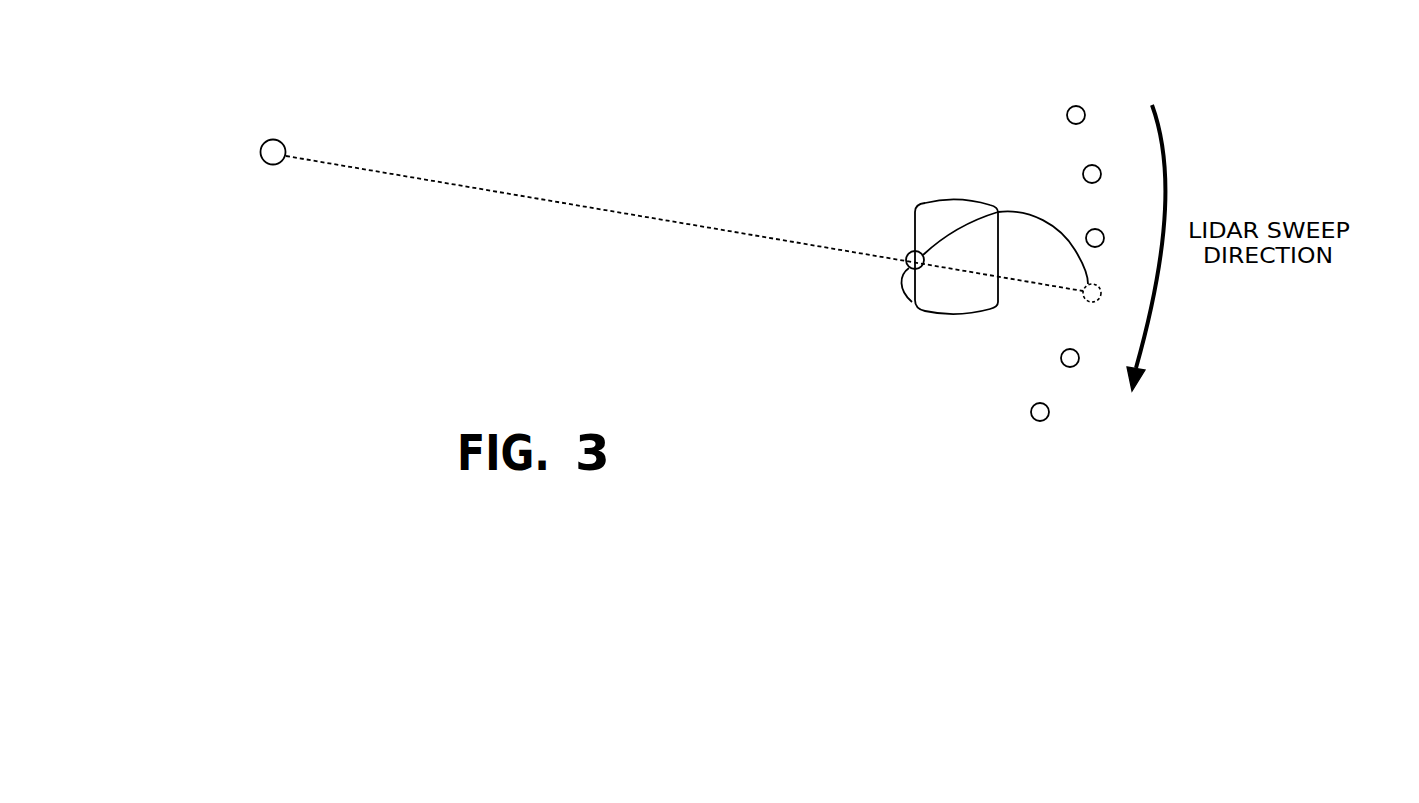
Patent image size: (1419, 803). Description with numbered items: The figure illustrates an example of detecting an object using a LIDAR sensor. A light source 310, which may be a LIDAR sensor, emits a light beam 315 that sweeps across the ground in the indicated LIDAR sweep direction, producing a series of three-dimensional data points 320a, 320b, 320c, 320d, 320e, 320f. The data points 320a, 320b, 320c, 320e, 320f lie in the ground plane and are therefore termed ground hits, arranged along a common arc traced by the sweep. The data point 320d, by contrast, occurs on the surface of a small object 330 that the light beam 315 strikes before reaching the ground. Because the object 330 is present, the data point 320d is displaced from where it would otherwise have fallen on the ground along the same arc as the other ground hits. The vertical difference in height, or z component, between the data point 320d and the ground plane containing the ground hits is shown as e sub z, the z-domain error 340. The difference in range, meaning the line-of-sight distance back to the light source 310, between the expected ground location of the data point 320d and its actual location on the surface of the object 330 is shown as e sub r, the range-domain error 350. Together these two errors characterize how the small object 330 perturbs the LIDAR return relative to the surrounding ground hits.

The light source 310 is at (269, 140).
The light beam 315 is at (537, 192).
The 3D data point 320a is at (1076, 105).
The 3D data point 320b is at (1085, 168).
The 3D data point 320c is at (1095, 229).
The 3D data point 320d is at (907, 252).
The 3D data point 320e is at (1061, 359).
The 3D data point 320f is at (1030, 412).
The small object 330 is at (935, 202).
The z-domain error 340 is at (902, 285).
The range-domain error 350 is at (1020, 212).